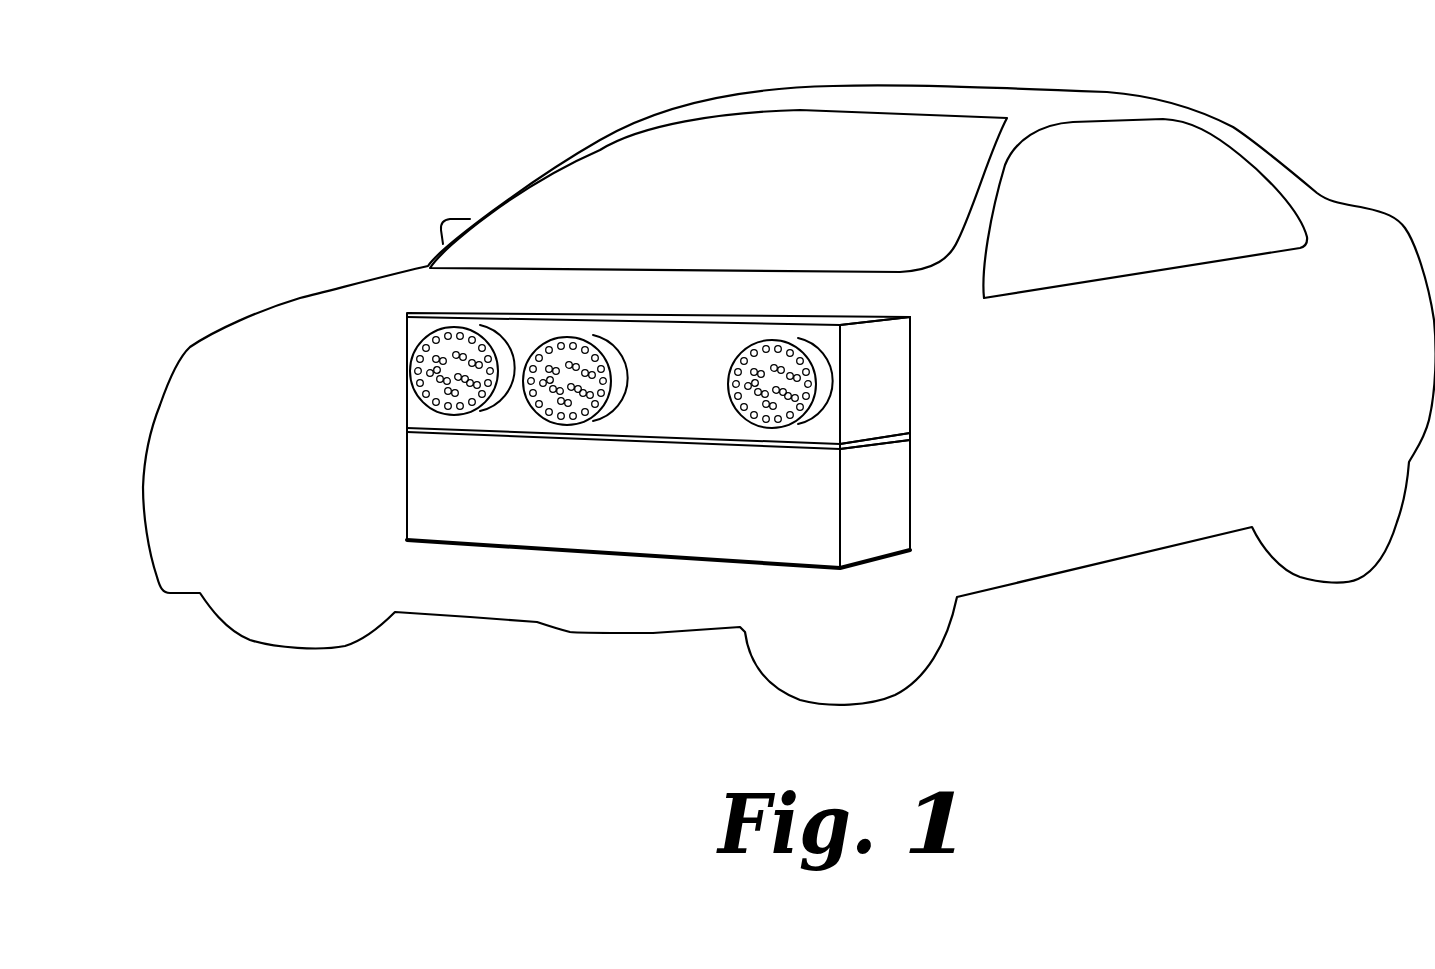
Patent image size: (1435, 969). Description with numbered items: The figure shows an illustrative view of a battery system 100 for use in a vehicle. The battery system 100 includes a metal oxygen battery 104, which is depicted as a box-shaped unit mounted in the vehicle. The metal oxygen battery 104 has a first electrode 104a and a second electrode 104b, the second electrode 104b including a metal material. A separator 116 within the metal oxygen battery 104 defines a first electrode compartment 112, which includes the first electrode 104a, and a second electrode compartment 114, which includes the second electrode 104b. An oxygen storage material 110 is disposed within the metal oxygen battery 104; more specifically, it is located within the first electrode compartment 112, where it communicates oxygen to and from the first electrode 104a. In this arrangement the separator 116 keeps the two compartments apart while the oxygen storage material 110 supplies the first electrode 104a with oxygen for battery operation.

The battery system 100 is at (927, 142).
The metal oxygen battery 104 is at (733, 435).
The first electrode 104a is at (708, 400).
The second electrode 104b is at (656, 513).
The oxygen storage material 110 is at (520, 430).
The first electrode compartment 112 is at (913, 381).
The second electrode compartment 114 is at (913, 497).
The separator 116 is at (913, 443).